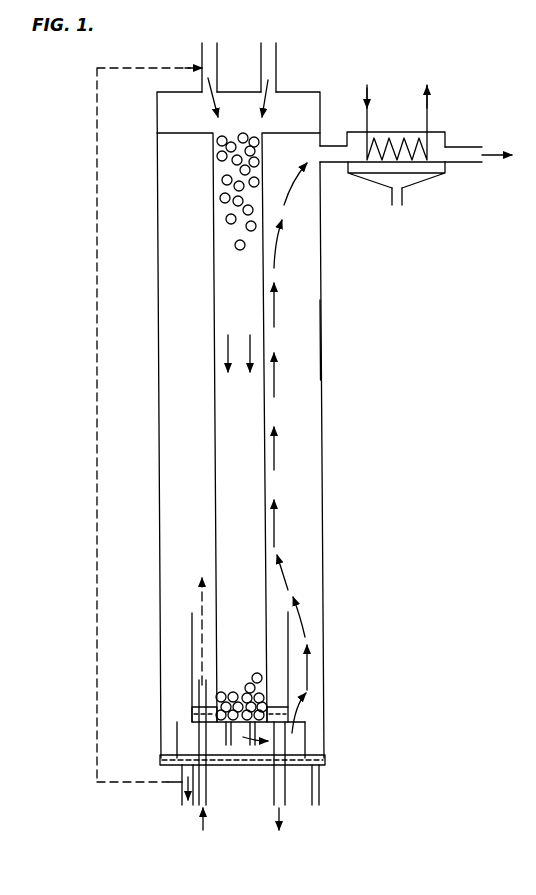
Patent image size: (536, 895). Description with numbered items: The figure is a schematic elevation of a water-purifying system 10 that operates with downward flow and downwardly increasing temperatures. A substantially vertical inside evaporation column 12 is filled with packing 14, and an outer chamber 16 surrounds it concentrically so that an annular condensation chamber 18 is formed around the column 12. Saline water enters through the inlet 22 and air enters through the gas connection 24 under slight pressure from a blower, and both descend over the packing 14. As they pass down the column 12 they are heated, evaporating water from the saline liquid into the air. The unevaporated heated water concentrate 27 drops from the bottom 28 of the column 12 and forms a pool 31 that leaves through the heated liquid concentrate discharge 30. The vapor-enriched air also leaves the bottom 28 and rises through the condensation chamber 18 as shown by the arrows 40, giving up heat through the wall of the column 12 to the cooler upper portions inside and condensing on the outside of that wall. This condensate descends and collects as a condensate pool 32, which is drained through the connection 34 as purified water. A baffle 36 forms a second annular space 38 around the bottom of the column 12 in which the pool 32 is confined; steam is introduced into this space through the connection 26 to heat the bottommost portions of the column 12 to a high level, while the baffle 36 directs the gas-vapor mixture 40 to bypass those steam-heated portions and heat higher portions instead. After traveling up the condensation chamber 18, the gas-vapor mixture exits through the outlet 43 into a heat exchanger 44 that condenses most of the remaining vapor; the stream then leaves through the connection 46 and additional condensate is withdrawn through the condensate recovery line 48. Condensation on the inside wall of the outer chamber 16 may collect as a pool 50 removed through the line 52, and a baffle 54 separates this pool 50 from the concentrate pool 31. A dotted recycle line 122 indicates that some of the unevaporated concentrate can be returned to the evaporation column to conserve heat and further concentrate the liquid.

The system 10 is at (322, 293).
The evaporation column 12 is at (263, 341).
The packing 14 is at (217, 156).
The outer chamber 16 is at (322, 390).
The condensation chamber 18 is at (302, 447).
The inlet 22 is at (202, 50).
The gas connection 24 is at (277, 58).
The steam connection 26 is at (207, 800).
The heated water concentrate 27 is at (232, 748).
The bottom of chamber 28 is at (223, 722).
The heated liquid concentrate discharge 30 is at (182, 798).
The pool 31 is at (263, 765).
The condensate pool 32 is at (287, 717).
The drain connection 34 is at (287, 797).
The baffle 36 is at (192, 647).
The second annular space 38 is at (280, 687).
The arrows 40 is at (307, 627).
The outlet 43 is at (388, 186).
The heat exchanger 44 is at (387, 132).
The connection 46 is at (463, 147).
The condensate recovery line 48 is at (403, 195).
The pool 50 is at (325, 757).
The line 52 is at (319, 790).
The baffle 54 is at (305, 735).
The recycle line 122 is at (97, 388).